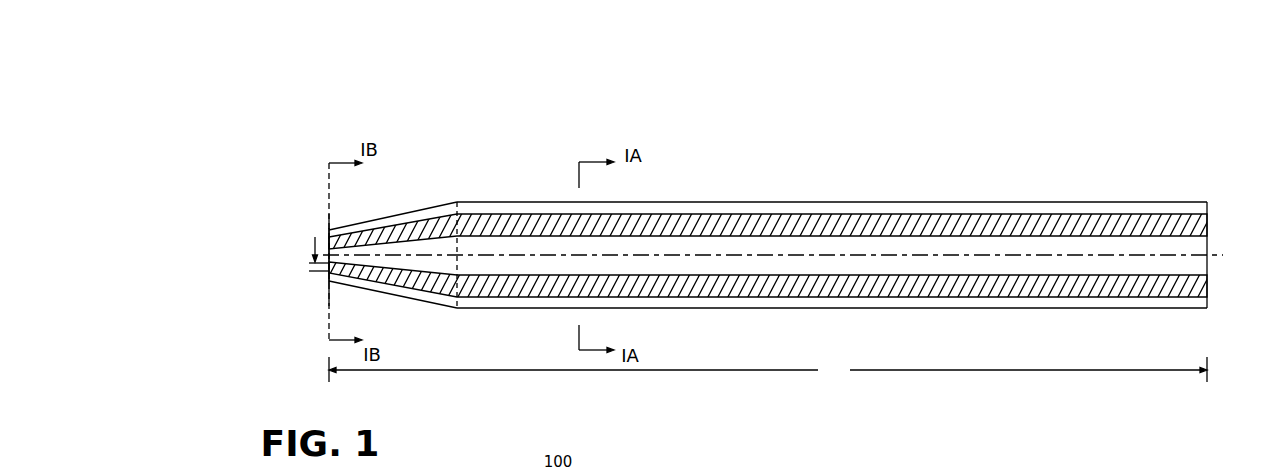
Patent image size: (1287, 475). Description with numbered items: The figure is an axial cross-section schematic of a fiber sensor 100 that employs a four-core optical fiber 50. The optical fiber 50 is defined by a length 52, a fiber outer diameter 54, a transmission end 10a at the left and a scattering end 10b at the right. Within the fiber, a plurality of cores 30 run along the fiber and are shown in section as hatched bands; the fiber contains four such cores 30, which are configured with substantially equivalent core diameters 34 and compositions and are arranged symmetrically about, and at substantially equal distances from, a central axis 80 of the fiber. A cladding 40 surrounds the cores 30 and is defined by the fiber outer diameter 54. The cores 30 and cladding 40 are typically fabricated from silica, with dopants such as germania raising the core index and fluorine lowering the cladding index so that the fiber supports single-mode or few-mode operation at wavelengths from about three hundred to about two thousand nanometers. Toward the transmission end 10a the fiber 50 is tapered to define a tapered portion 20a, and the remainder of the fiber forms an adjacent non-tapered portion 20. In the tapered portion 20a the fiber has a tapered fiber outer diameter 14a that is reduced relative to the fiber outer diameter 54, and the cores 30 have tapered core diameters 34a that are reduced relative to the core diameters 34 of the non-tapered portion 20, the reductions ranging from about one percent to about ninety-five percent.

The fiber sensor 100 is at (1130, 118).
The non-tapered portion 20 is at (903, 190).
The tapered portion 20a is at (396, 208).
The cores 30 is at (842, 290).
The core diameters 34 is at (748, 255).
The cladding 40 is at (970, 208).
The optical fiber 50 is at (1110, 202).
The central axis 80 is at (1028, 250).
The fiber outer diameter 54 is at (553, 332).
The transmission end 10a is at (326, 231).
The scattering end 10b is at (1210, 218).
The tapered fiber outer diameter 14a is at (327, 216).
The tapered core diameters 34a is at (315, 275).
The length 52 is at (768, 369).